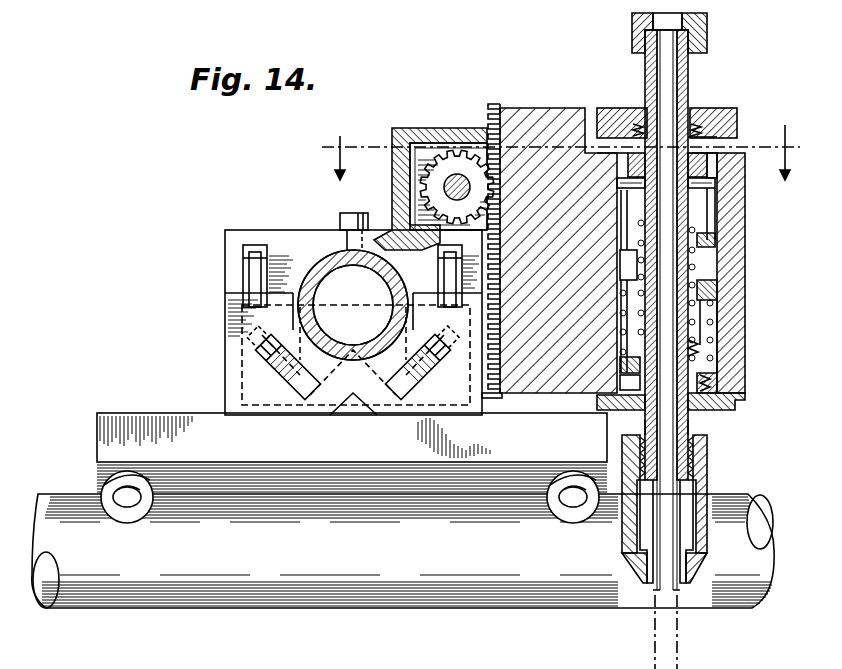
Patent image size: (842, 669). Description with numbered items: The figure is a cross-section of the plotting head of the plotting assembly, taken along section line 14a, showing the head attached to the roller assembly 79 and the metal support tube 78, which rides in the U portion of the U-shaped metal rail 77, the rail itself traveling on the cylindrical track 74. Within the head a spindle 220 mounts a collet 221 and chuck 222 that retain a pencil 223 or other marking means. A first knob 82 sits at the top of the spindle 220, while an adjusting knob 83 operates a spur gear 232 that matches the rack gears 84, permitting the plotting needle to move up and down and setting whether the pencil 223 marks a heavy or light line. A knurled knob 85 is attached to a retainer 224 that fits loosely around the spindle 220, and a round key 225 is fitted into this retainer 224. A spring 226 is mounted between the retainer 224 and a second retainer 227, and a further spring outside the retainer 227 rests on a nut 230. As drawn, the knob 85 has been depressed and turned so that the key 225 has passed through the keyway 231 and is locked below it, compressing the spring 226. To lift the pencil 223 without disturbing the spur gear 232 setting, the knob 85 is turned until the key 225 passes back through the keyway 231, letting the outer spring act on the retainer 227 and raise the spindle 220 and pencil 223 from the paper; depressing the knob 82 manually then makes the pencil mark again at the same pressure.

The section line 14a is at (543, 146).
The track 74 is at (236, 608).
The U-shaped metal rail 77 is at (242, 366).
The metal support tube 78 is at (326, 270).
The roller assembly 79 is at (262, 225).
The first knob 82 is at (707, 39).
The adjusting knob 83 is at (400, 178).
The rack gears 84 is at (490, 108).
The knurled knob 85 is at (729, 108).
The spindle 220 is at (647, 73).
The collet 221 is at (683, 590).
The chuck 222 is at (708, 460).
The pencil 223 is at (708, 345).
The retainer 224 is at (704, 213).
The round key 225 is at (713, 186).
The spring 226 is at (700, 264).
The retainer 227 is at (708, 312).
The nut 230 is at (722, 413).
The keyway 231 is at (716, 163).
The spur gear 232 is at (470, 130).